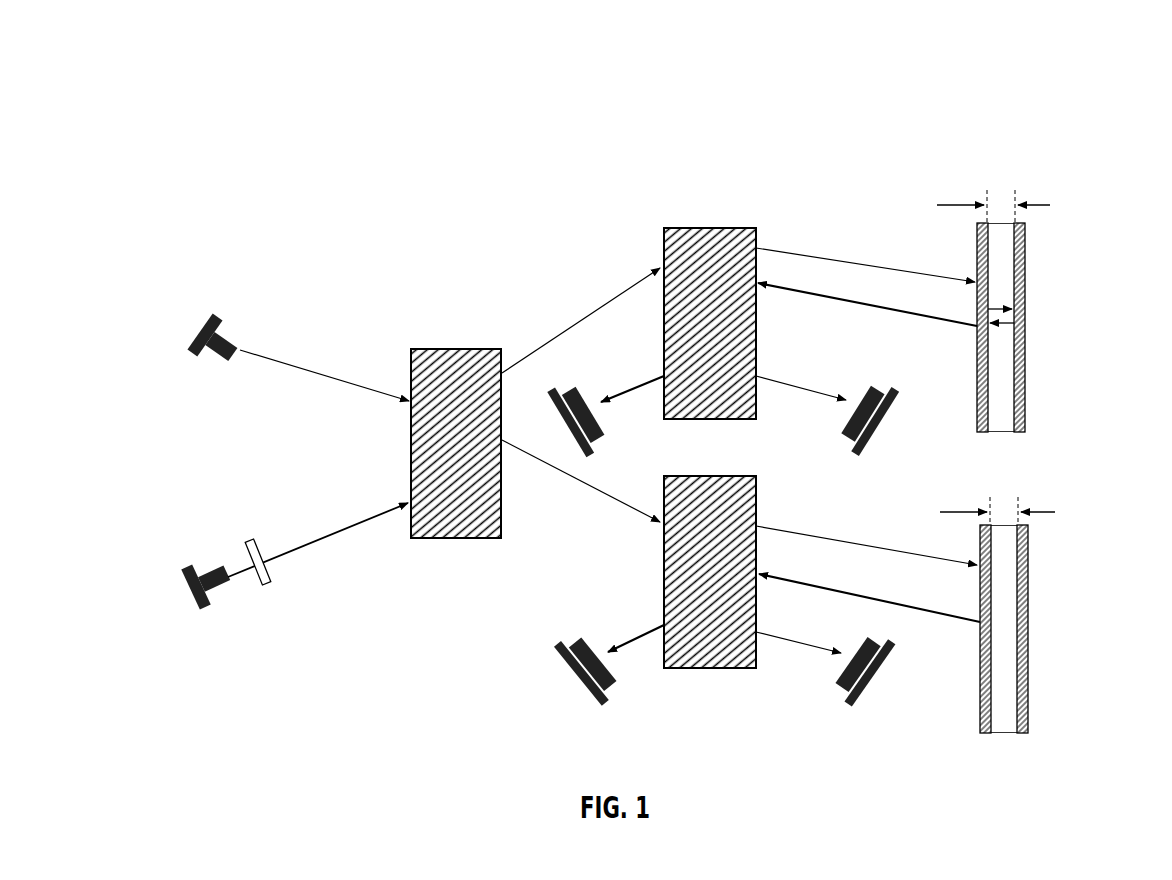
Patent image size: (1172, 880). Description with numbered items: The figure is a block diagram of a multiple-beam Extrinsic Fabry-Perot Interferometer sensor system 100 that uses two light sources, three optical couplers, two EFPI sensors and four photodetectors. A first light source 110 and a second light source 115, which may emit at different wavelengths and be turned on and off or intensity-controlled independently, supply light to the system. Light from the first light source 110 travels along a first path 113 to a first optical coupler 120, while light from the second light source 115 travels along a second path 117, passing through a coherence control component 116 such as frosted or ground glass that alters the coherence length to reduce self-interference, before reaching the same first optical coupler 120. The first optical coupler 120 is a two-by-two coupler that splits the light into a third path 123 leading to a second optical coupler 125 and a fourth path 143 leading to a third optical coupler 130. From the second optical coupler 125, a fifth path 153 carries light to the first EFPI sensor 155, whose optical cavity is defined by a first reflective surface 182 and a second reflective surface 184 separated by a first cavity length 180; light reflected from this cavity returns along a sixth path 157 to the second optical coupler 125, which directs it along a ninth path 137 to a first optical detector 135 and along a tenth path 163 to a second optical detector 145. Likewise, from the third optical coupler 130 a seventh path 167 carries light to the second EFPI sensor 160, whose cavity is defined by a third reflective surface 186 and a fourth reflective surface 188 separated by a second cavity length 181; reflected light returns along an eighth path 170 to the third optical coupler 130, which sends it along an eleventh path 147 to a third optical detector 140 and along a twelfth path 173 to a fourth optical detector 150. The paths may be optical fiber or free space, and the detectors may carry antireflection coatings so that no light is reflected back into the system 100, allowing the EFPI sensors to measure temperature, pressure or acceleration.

The multiple-beam EFPI sensor system 100 is at (587, 148).
The first light source 110 is at (213, 310).
The first path 113 is at (330, 375).
The second light source 115 is at (187, 565).
The coherence control component 116 is at (268, 587).
The second path 117 is at (362, 520).
The first optical coupler 120 is at (455, 348).
The third path 123 is at (602, 307).
The second optical coupler 125 is at (710, 227).
The third optical coupler 130 is at (707, 670).
The first optical detector 135 is at (575, 388).
The ninth path 137 is at (630, 390).
The third optical detector 140 is at (573, 670).
The fourth path 143 is at (628, 507).
The second optical detector 145 is at (880, 420).
The eleventh path 147 is at (636, 631).
The fourth optical detector 150 is at (875, 670).
The fifth path 153 is at (910, 275).
The first EFPI sensor 155 is at (1045, 356).
The sixth path 157 is at (886, 310).
The second EFPI sensor 160 is at (1058, 653).
The tenth path 163 is at (812, 392).
The seventh path 167 is at (880, 548).
The eighth path 170 is at (903, 607).
The twelfth path 173 is at (780, 640).
The first cavity length 180 is at (1012, 206).
The second cavity length 181 is at (1015, 511).
The first reflective surface 182 is at (987, 433).
The second reflective surface 184 is at (1018, 433).
The third reflective surface 186 is at (988, 733).
The fourth reflective surface 188 is at (1022, 733).